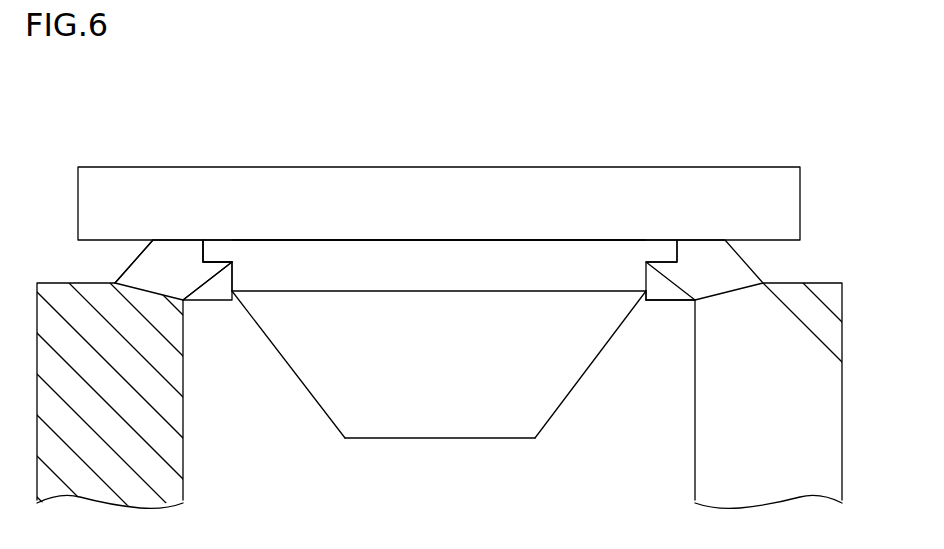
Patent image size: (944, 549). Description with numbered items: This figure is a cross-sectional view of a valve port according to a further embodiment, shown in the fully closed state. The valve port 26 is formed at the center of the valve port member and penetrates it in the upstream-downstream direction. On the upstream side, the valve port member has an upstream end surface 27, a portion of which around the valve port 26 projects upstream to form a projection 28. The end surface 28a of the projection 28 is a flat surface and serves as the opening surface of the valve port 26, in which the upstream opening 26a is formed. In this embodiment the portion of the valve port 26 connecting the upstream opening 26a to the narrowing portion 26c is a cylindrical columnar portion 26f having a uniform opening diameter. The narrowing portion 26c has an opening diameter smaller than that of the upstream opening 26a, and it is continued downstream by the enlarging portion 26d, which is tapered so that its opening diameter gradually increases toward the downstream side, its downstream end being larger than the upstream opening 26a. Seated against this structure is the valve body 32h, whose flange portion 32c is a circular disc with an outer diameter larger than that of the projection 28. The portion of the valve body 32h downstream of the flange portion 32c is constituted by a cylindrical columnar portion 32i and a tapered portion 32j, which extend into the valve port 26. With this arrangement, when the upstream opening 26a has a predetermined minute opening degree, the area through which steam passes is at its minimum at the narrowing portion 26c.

The valve port 26 is at (440, 265).
The upstream opening 26a is at (450, 236).
The narrowing portion 26c is at (226, 264).
The enlarging portion 26d is at (212, 272).
The cylindrical columnar portion 26f is at (206, 251).
The upstream end surface 27 is at (62, 283).
The projection 28 is at (750, 270).
The end surface 28a is at (170, 241).
The flange portion 32c is at (690, 194).
The valve body 32h is at (433, 393).
The cylindrical columnar portion 32i is at (648, 264).
The tapered portion 32j is at (584, 374).